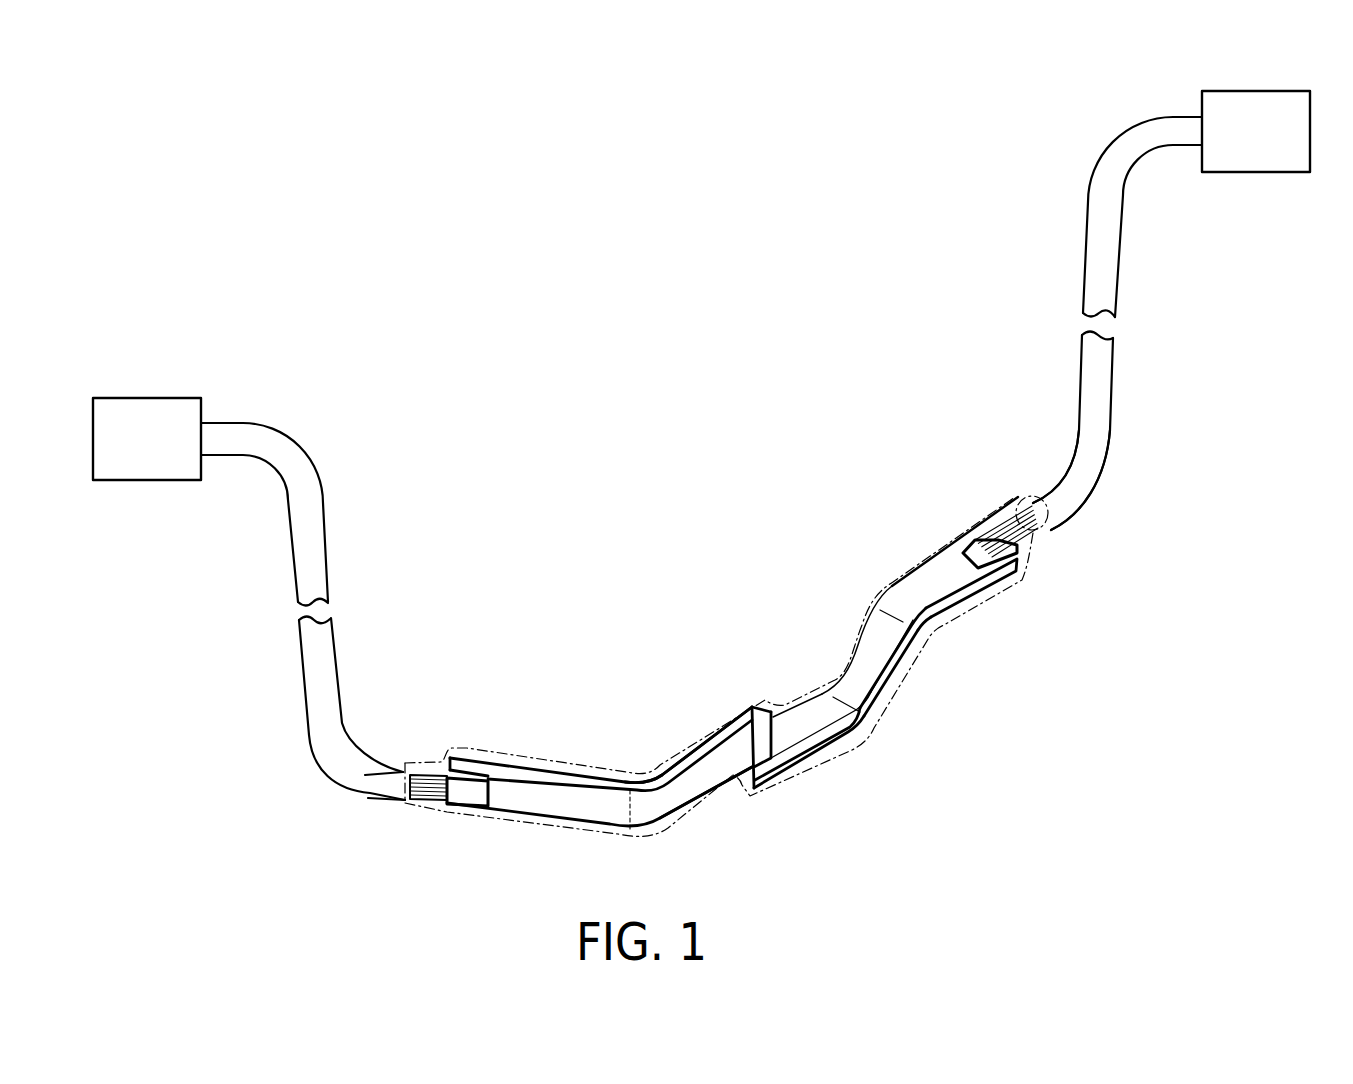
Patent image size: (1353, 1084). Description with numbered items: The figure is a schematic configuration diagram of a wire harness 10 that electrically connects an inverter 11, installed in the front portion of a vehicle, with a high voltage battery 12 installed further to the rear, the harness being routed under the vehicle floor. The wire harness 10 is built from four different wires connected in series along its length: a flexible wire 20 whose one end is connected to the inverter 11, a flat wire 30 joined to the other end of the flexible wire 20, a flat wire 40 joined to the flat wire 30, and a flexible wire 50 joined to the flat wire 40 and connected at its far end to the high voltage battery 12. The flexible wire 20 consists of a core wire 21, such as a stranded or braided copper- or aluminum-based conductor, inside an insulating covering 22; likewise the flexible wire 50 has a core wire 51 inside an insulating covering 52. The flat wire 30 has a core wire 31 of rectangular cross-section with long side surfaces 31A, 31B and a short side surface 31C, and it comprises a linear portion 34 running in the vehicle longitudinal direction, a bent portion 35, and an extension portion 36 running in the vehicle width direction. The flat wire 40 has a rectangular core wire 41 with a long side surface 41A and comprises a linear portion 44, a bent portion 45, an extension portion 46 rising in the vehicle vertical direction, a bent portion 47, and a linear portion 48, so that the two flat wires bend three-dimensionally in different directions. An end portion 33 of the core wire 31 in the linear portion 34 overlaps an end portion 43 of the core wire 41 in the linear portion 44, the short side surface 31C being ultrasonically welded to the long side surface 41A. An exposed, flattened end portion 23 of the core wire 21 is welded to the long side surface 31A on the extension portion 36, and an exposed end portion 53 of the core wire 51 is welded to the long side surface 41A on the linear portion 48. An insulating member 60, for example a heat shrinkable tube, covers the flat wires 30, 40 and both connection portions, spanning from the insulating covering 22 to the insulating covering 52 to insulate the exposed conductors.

The wire harness 10 is at (701, 456).
The inverter 11 is at (147, 397).
The high voltage battery 12 is at (1255, 91).
The flexible wire 20 is at (327, 547).
The core wire 21 is at (423, 791).
The insulating covering 22 is at (370, 780).
The end portion 23 is at (475, 795).
The flat wire 30 is at (609, 768).
The core wire 31 is at (609, 768).
The long side surface 31A is at (563, 807).
The long side surface 31B is at (533, 763).
The short side surface 31C is at (713, 790).
The end portion 33 is at (750, 715).
The linear portion 34 is at (703, 745).
The bent portion 35 is at (630, 770).
The extension portion 36 is at (580, 773).
The flat wire 40 is at (887, 654).
The core wire 41 is at (887, 654).
The long side surface 41A is at (802, 715).
The end portion 43 is at (778, 767).
The linear portion 44 is at (817, 753).
The bent portion 45 is at (867, 723).
The extension portion 46 is at (902, 673).
The bent portion 47 is at (925, 630).
The linear portion 48 is at (970, 600).
The flexible wire 50 is at (1078, 383).
The core wire 51 is at (1012, 517).
The insulating covering 52 is at (1070, 467).
The end portion 53 is at (978, 552).
The insulating member 60 is at (467, 742).